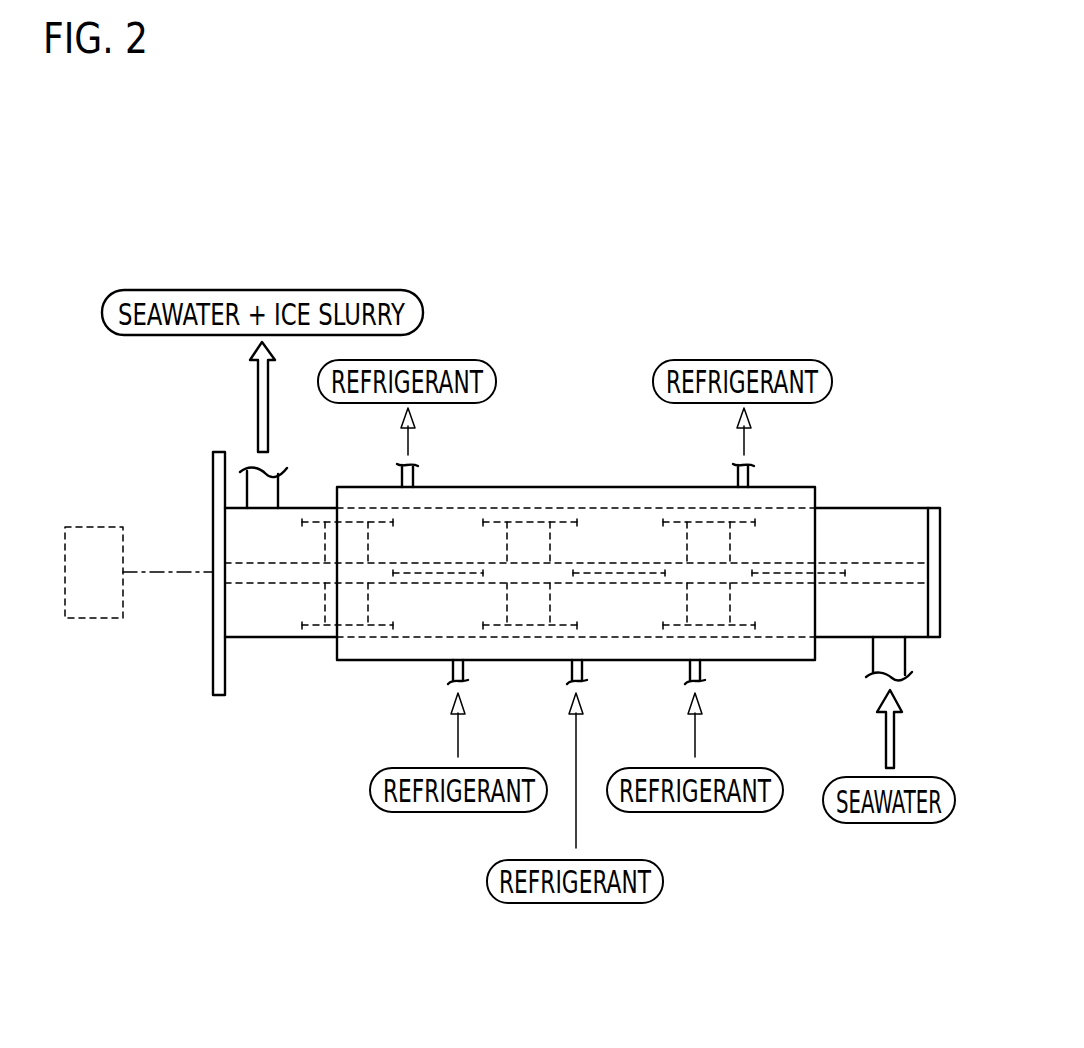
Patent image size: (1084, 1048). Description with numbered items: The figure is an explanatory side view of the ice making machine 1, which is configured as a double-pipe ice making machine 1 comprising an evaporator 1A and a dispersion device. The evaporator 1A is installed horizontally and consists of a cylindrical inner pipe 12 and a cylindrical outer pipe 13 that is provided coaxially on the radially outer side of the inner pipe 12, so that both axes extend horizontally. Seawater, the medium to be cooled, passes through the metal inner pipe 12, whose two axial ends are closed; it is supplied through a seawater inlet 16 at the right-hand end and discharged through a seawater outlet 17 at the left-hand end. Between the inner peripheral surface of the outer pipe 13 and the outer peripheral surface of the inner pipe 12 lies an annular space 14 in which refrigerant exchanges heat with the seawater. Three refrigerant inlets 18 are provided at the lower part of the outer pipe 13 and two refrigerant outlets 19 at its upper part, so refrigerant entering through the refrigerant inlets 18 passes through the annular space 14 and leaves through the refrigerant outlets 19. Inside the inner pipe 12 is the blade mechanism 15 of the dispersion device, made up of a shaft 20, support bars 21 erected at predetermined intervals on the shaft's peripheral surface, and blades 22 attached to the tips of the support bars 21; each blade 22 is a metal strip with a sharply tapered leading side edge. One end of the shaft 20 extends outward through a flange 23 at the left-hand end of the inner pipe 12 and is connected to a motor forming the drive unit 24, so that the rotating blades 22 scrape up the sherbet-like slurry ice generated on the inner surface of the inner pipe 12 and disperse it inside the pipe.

The ice making machine 1 is at (508, 468).
The evaporator 1A is at (838, 497).
The inner pipe 12 is at (895, 508).
The outer pipe 13 is at (815, 487).
The annular space 14 is at (755, 642).
The blade mechanism 15 is at (600, 546).
The seawater inlet 16 is at (906, 655).
The seawater outlet 17 is at (278, 490).
The refrigerant inlet 18 is at (452, 670).
The refrigerant outlet 19 is at (402, 478).
The shaft 20 is at (876, 558).
The support bar 21 is at (500, 548).
The blade 22 is at (535, 520).
The flange 23 is at (212, 480).
The drive unit 24 is at (99, 527).